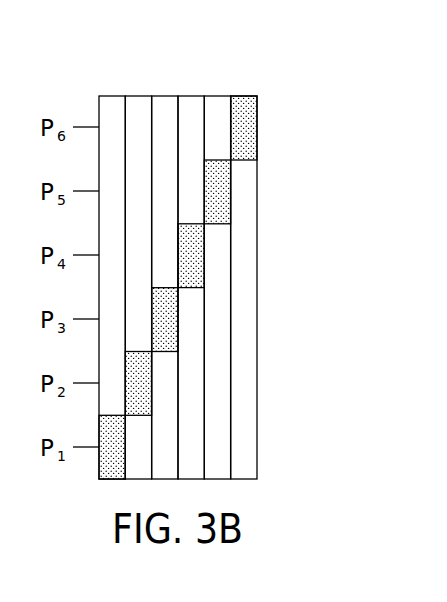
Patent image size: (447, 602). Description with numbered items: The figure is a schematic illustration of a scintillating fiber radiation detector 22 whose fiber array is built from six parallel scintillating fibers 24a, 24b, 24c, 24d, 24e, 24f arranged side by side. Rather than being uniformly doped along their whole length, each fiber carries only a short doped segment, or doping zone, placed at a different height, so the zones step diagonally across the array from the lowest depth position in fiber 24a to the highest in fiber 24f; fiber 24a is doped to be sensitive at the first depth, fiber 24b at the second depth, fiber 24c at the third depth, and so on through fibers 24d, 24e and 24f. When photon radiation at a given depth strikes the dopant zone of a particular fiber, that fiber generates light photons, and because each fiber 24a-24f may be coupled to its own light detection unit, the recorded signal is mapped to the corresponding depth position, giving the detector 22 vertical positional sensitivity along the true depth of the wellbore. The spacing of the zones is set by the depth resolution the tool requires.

The scintillating fiber radiation detector 22 is at (283, 231).
The scintillating fiber 24a is at (107, 96).
The scintillating fiber 24b is at (135, 96).
The scintillating fiber 24c is at (163, 96).
The scintillating fiber 24d is at (192, 96).
The scintillating fiber 24e is at (217, 96).
The scintillating fiber 24f is at (245, 96).